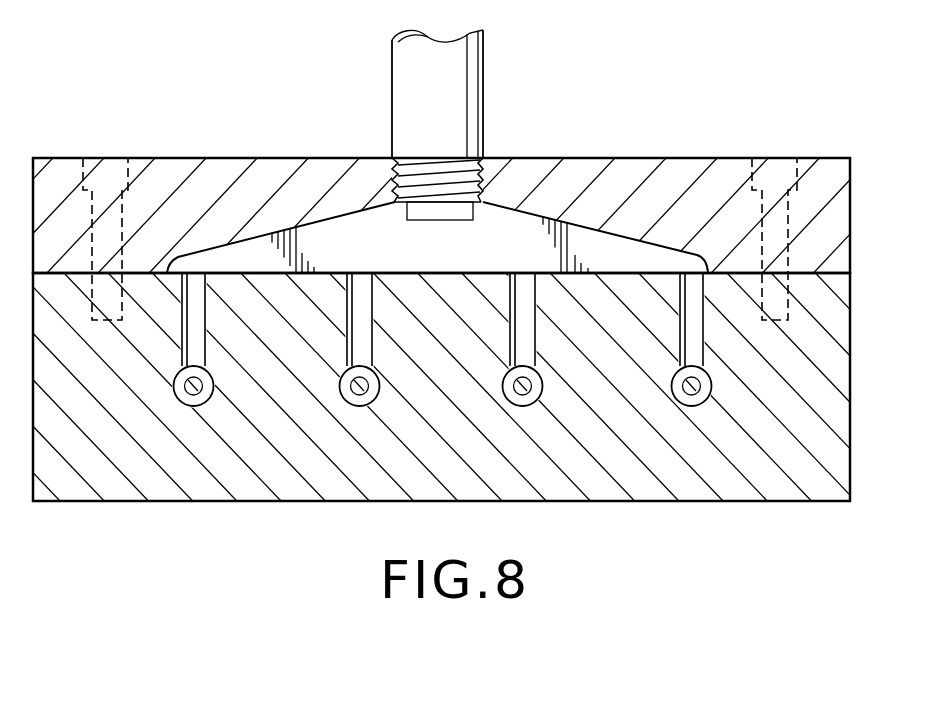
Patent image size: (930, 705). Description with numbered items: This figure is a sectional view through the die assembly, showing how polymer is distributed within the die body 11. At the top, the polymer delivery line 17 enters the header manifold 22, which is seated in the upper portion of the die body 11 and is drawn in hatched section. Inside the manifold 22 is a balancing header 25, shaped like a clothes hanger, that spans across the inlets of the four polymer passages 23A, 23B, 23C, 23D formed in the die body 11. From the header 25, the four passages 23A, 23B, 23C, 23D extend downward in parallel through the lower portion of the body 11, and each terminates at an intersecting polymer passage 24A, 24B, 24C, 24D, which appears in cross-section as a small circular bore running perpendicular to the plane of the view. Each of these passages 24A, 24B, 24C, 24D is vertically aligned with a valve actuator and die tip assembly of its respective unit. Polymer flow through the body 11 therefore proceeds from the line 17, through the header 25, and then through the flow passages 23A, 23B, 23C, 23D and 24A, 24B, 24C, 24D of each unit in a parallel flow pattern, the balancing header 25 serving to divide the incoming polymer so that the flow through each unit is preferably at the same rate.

The die body 11 is at (150, 510).
The polymer delivery line 17 is at (412, 70).
The header manifold 22 is at (617, 152).
The balancing header 25 is at (342, 236).
The polymer passage 23A is at (187, 335).
The polymer passage 23B is at (349, 335).
The polymer passage 23C is at (512, 333).
The polymer passage 23D is at (682, 326).
The polymer passage 24A is at (193, 393).
The polymer passage 24B is at (360, 393).
The polymer passage 24C is at (523, 393).
The polymer passage 24D is at (692, 393).